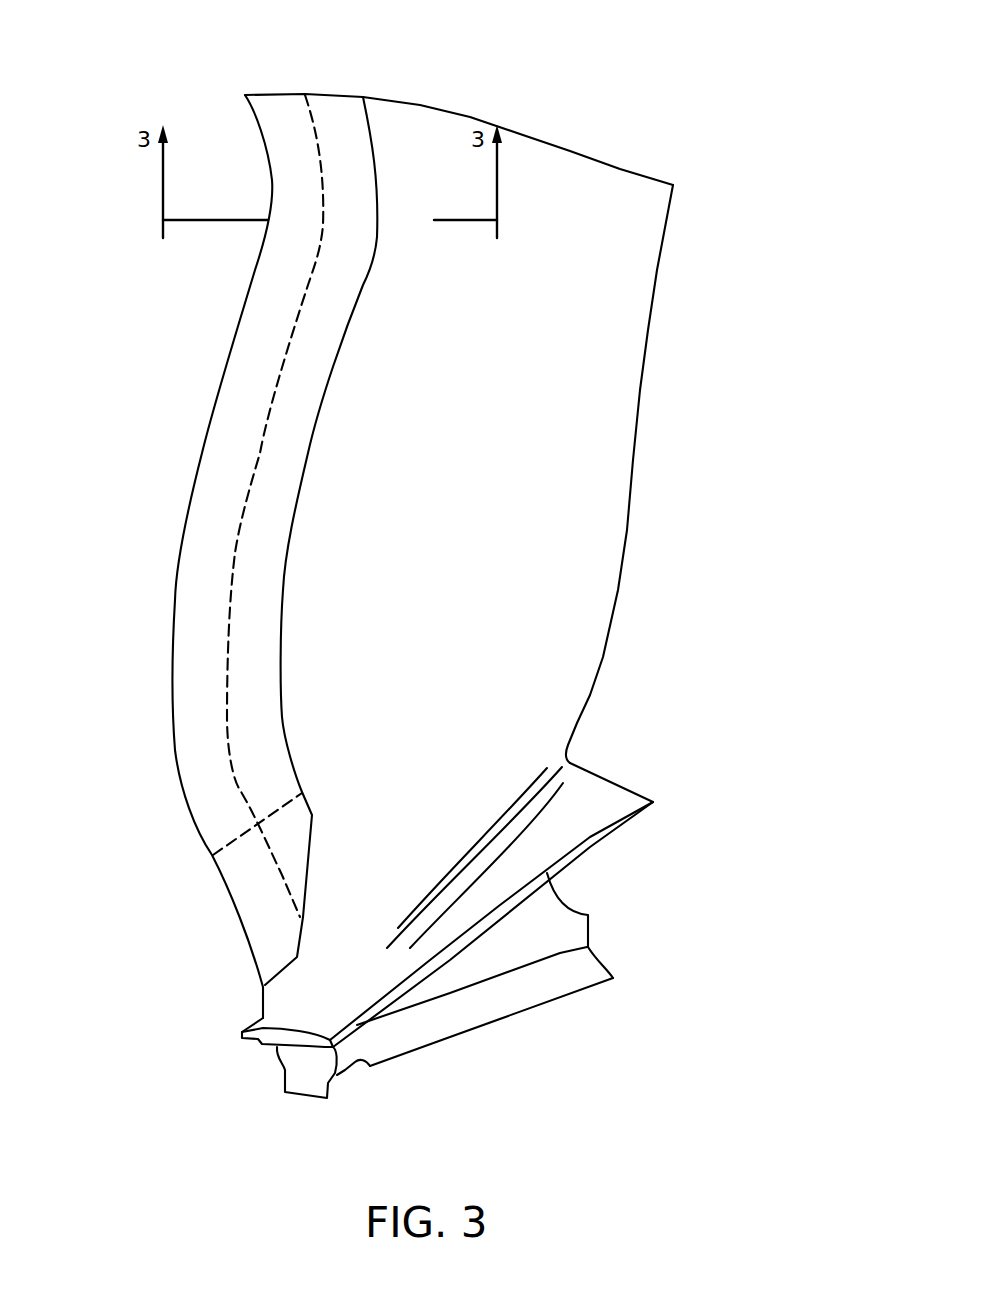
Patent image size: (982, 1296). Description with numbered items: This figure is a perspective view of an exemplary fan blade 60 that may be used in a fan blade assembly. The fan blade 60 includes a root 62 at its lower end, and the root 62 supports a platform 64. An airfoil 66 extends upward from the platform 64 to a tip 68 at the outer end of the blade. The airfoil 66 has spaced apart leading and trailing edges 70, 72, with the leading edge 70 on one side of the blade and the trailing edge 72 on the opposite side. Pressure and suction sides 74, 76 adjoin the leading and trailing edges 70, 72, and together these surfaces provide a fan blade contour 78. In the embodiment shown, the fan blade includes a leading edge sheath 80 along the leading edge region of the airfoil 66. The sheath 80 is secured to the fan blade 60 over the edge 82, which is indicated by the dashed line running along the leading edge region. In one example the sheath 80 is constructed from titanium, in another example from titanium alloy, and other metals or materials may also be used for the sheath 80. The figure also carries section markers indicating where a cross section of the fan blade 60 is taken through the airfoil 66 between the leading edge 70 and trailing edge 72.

The fan blade 60 is at (692, 162).
The root 62 is at (580, 900).
The platform 64 is at (603, 786).
The airfoil 66 is at (640, 392).
The tip 68 is at (477, 118).
The leading edge 70 is at (201, 455).
The trailing edge 72 is at (657, 270).
The pressure side 74 is at (237, 337).
The suction side 76 is at (444, 540).
The fan blade contour 78 is at (573, 542).
The leading edge sheath 80 is at (210, 680).
The edge 82 is at (228, 603).